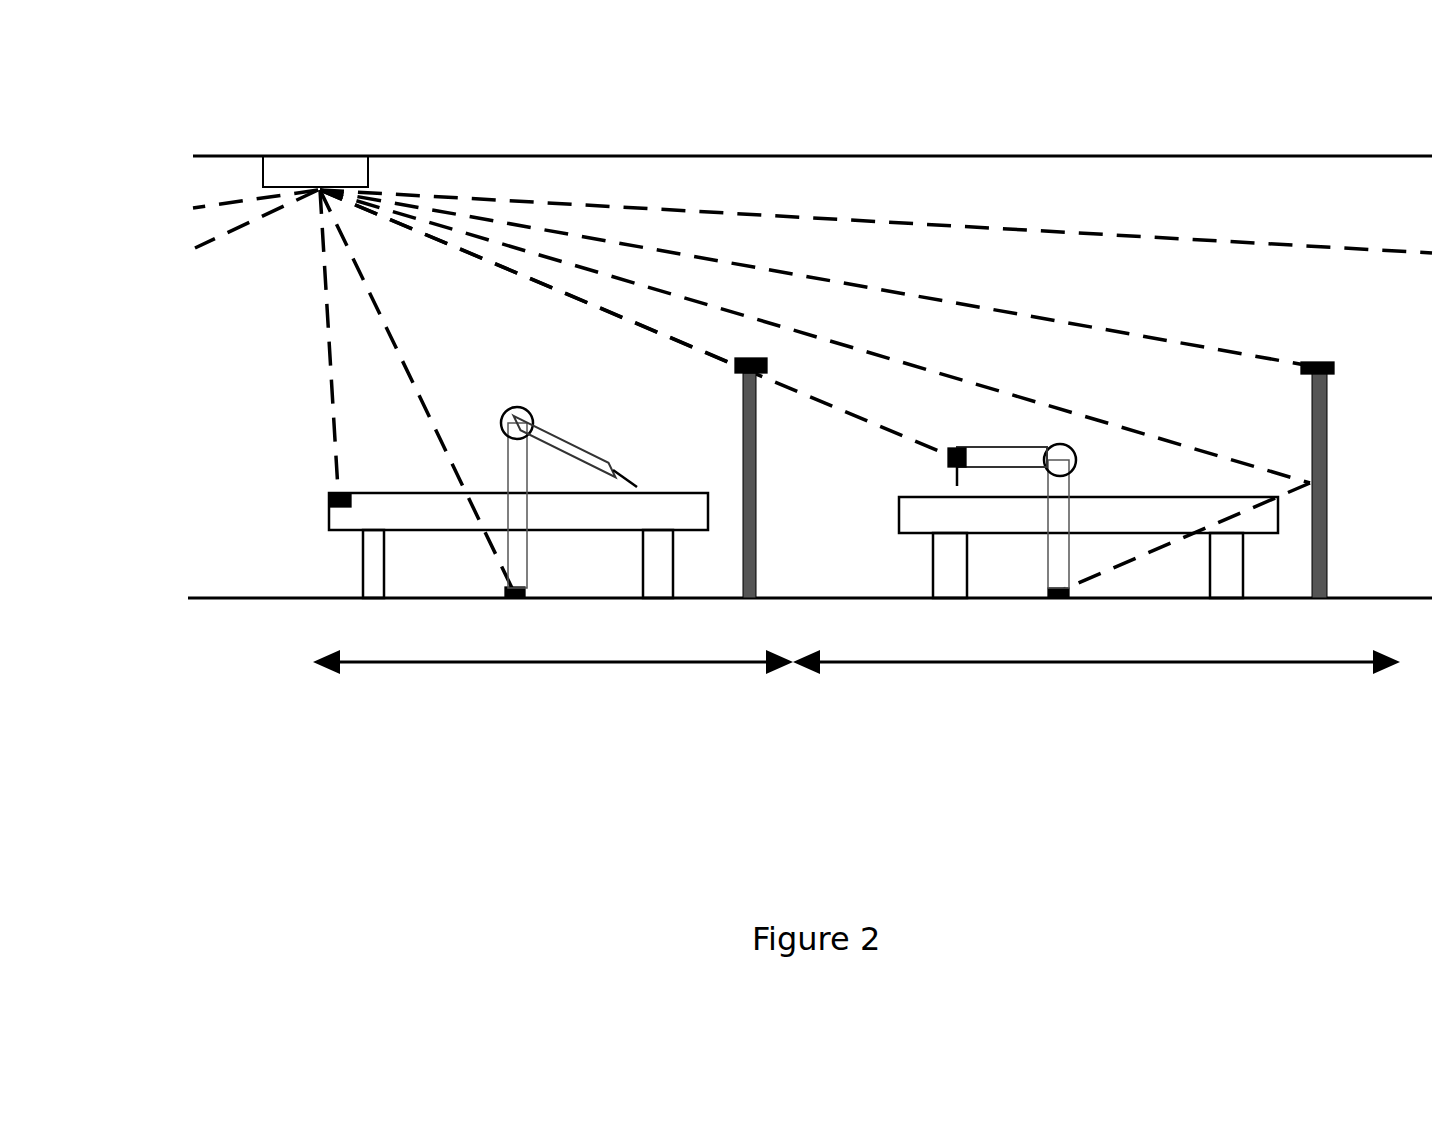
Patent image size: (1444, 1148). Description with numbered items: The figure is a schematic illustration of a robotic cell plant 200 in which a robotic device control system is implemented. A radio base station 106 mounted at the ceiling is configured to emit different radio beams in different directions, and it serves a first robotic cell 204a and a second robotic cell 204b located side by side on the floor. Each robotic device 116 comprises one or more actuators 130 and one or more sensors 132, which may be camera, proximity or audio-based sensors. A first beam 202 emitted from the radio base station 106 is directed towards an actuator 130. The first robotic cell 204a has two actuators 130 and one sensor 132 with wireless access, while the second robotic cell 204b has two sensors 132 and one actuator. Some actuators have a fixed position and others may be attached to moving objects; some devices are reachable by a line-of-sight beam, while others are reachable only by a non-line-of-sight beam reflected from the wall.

The robotic cell plant 200 is at (290, 797).
The radio base station 106 is at (332, 162).
The first beam 202 is at (235, 327).
The actuator 130 is at (302, 488).
The robotic device 116 is at (505, 463).
The sensor 132 is at (742, 423).
The first robotic cell 204a is at (580, 710).
The second robotic cell 204b is at (1093, 702).